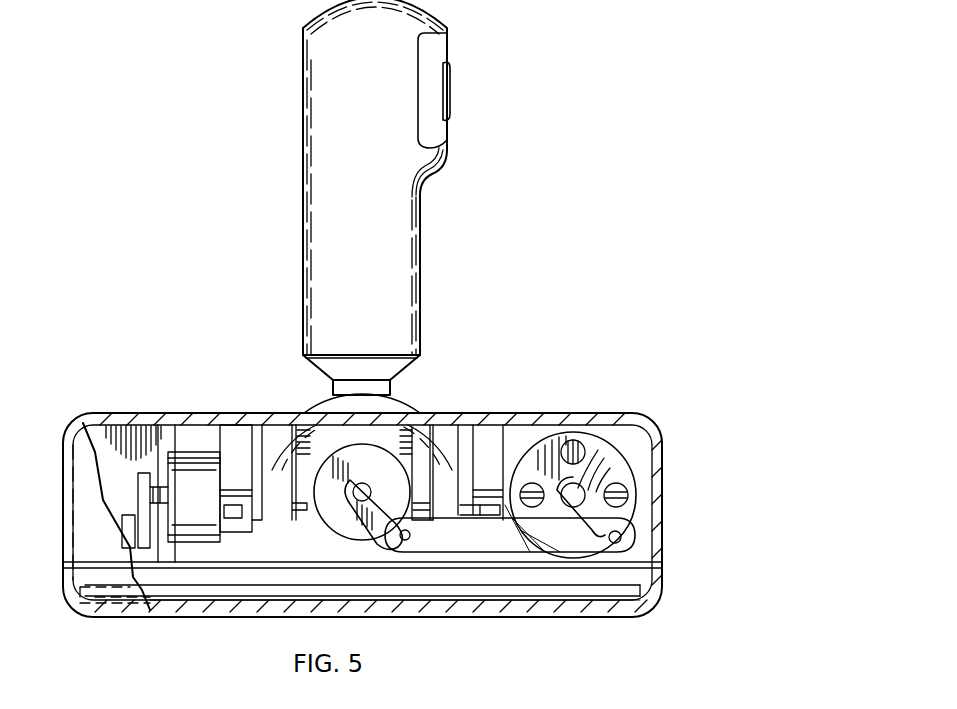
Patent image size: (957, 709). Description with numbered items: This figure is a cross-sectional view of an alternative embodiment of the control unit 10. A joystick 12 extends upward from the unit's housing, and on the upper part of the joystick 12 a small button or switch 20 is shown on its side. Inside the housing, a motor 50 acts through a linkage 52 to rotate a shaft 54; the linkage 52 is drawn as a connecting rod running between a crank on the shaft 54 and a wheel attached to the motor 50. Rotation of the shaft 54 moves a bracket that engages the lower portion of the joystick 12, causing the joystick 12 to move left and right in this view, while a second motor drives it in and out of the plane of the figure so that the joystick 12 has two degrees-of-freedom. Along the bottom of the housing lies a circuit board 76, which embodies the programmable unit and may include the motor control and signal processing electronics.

The control unit 10 is at (462, 370).
The joystick 12 is at (395, 240).
The switch button 20 is at (450, 93).
The motor 50 is at (590, 440).
The linkage 52 is at (545, 545).
The shaft 54 is at (360, 493).
The circuit board 76 is at (215, 597).